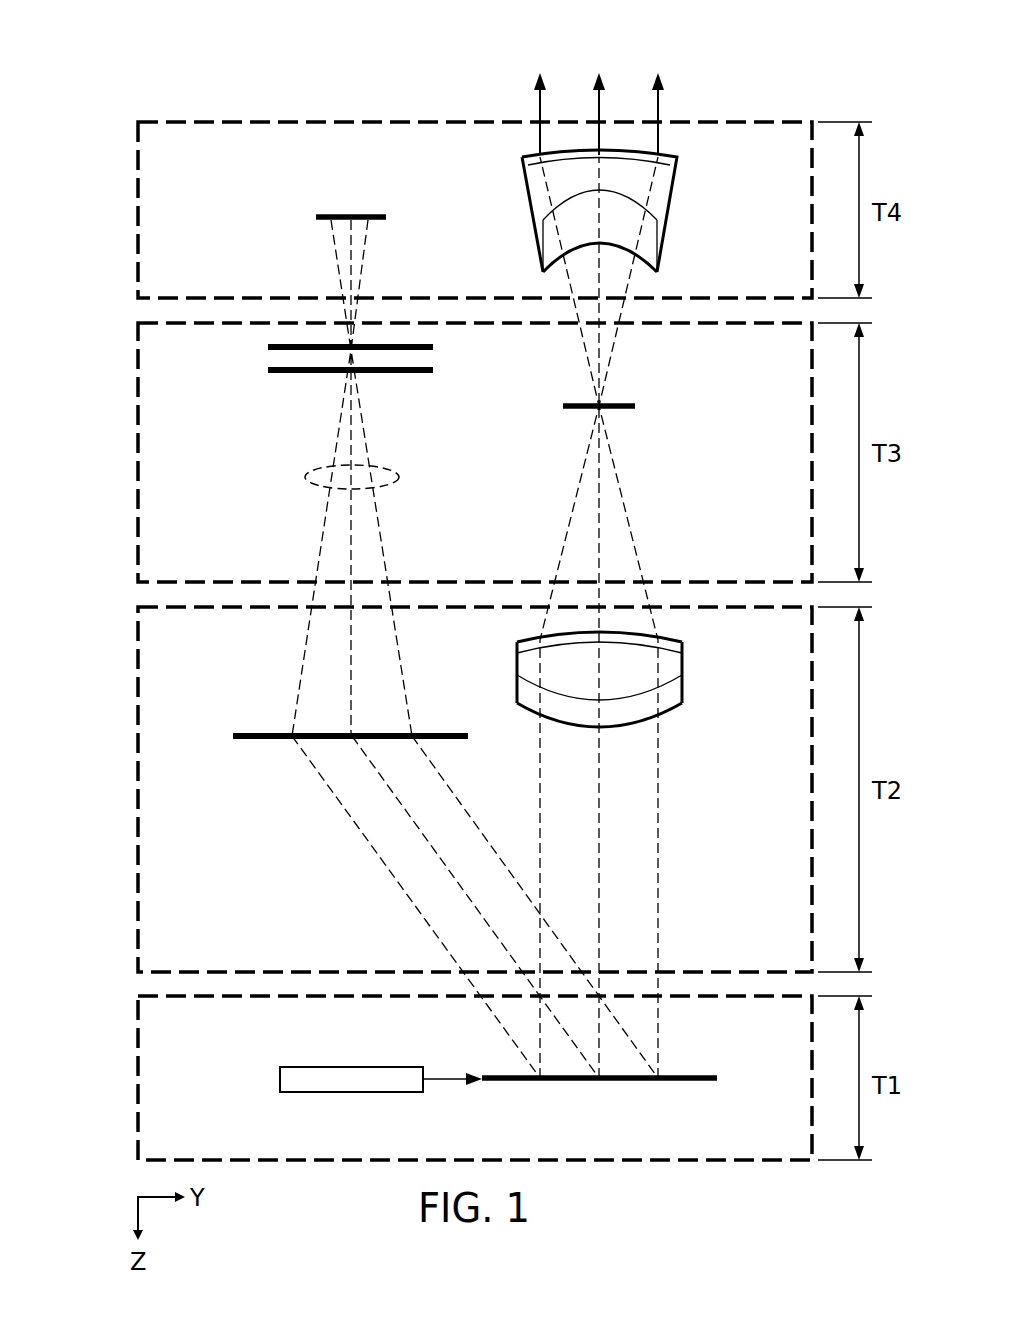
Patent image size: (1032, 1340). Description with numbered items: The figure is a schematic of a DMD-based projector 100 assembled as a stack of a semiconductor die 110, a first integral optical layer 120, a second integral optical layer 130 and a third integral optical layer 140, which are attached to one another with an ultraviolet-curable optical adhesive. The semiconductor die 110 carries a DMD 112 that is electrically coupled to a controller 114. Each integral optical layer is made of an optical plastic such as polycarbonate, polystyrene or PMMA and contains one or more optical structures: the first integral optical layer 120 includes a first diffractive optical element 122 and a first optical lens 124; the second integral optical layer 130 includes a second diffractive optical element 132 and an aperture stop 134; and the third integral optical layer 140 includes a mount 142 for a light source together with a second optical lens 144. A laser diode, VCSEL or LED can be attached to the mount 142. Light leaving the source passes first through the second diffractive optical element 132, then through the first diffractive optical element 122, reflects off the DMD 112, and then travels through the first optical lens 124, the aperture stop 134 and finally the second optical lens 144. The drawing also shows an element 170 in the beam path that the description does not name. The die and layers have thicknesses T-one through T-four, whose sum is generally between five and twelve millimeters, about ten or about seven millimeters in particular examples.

The DMD-based projector 100 is at (252, 70).
The semiconductor die 110 is at (132, 1095).
The DMD 112 is at (612, 1082).
The controller 114 is at (350, 1093).
The first integral optical layer 120 is at (132, 807).
The first diffractive optical element 122 is at (258, 739).
The first optical lens 124 is at (683, 665).
The second integral optical layer 130 is at (132, 434).
The second diffractive optical element 132 is at (250, 361).
The aperture stop 134 is at (623, 400).
The third integral optical layer 140 is at (132, 182).
The mount 142 is at (314, 214).
The second optical lens 144 is at (669, 217).
The spot / beam cross-section 170 is at (306, 477).